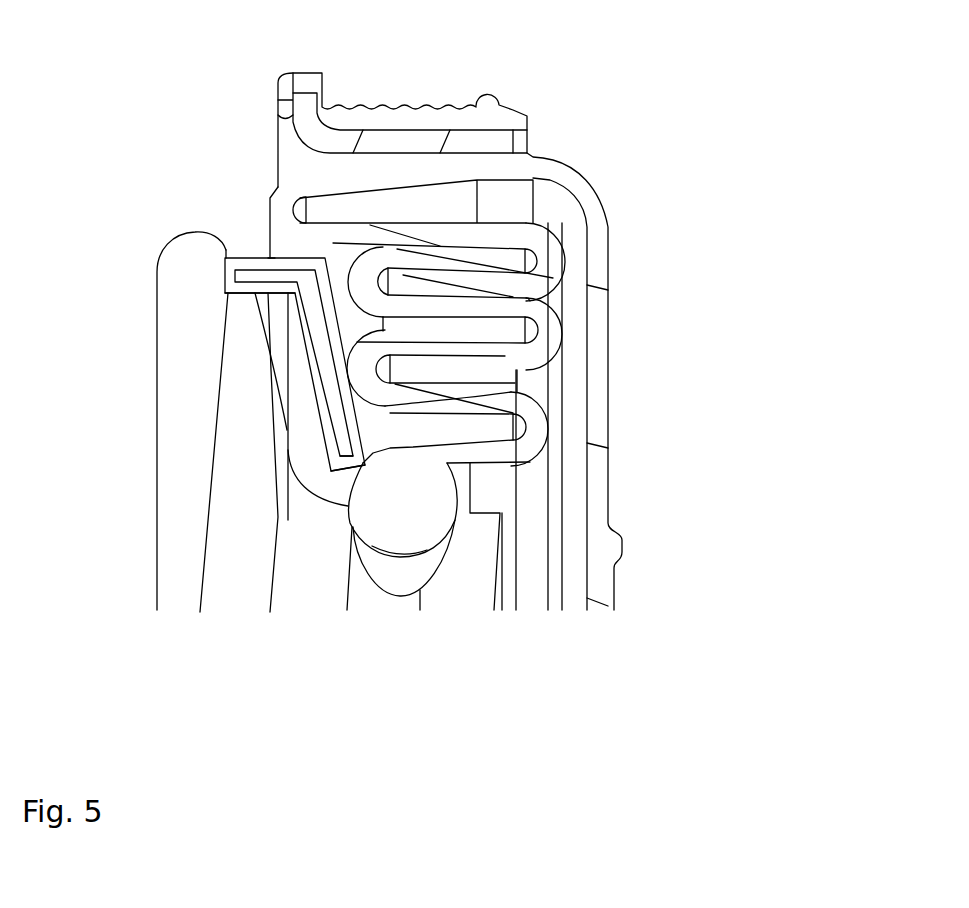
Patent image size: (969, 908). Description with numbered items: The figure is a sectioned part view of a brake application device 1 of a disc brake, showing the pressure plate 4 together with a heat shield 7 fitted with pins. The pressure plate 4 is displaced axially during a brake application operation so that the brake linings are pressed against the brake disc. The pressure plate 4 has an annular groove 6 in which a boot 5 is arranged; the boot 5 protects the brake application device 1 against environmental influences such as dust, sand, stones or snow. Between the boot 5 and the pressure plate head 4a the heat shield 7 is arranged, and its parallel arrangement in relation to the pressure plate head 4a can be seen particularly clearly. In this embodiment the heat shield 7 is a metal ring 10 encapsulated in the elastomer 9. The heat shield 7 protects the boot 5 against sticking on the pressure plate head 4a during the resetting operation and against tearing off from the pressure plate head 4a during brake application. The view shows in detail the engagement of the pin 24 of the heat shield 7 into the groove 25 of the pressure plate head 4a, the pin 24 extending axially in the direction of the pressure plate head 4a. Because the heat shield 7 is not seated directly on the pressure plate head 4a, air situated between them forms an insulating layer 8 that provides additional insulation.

The brake application device 1 is at (656, 405).
The pressure plate 4 is at (338, 611).
The pressure plate head 4a is at (214, 238).
The boot 5 is at (277, 157).
The annular groove 6 is at (432, 593).
The heat shield 7 is at (257, 257).
The insulating layer 8 is at (308, 436).
The elastomer 9 is at (320, 337).
The metal ring 10 is at (330, 390).
The pin 24 is at (223, 288).
The groove 25 is at (160, 255).